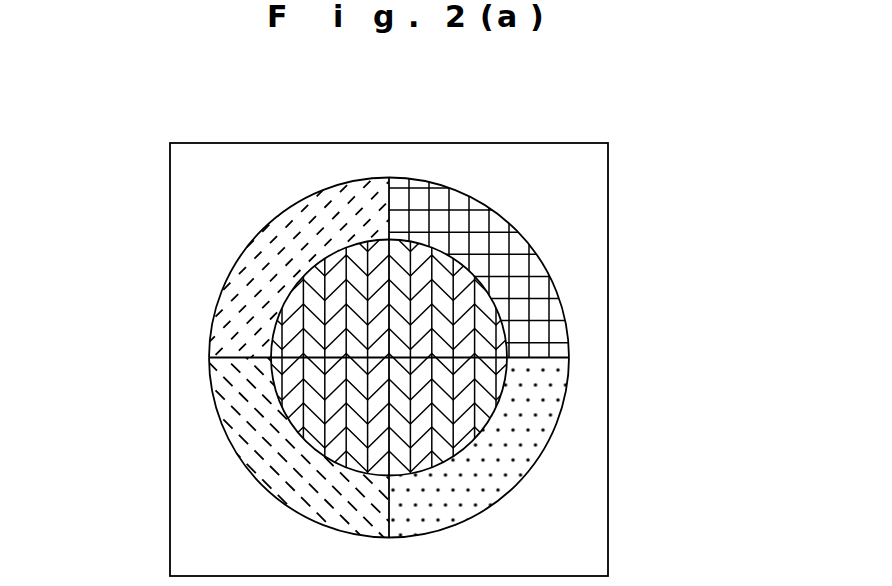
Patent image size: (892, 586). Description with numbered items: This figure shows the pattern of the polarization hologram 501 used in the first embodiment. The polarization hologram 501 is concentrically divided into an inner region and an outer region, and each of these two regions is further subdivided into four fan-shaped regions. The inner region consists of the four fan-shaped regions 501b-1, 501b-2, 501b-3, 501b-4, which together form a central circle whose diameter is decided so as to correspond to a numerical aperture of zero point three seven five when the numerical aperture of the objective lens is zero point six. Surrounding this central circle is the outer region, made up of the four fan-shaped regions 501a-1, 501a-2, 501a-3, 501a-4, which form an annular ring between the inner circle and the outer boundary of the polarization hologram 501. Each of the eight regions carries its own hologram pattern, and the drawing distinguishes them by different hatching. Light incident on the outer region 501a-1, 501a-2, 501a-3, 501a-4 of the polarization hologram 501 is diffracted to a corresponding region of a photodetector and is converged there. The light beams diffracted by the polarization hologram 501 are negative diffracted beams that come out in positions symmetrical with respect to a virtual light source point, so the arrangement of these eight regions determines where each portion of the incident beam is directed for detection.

The polarization hologram 501 is at (610, 239).
The outer region 501a-1 is at (267, 263).
The outer region 501a-2 is at (523, 303).
The outer region 501a-3 is at (225, 393).
The outer region 501a-4 is at (540, 413).
The inner region 501b-1 is at (322, 310).
The inner region 501b-2 is at (437, 300).
The inner region 501b-3 is at (328, 432).
The inner region 501b-4 is at (443, 428).